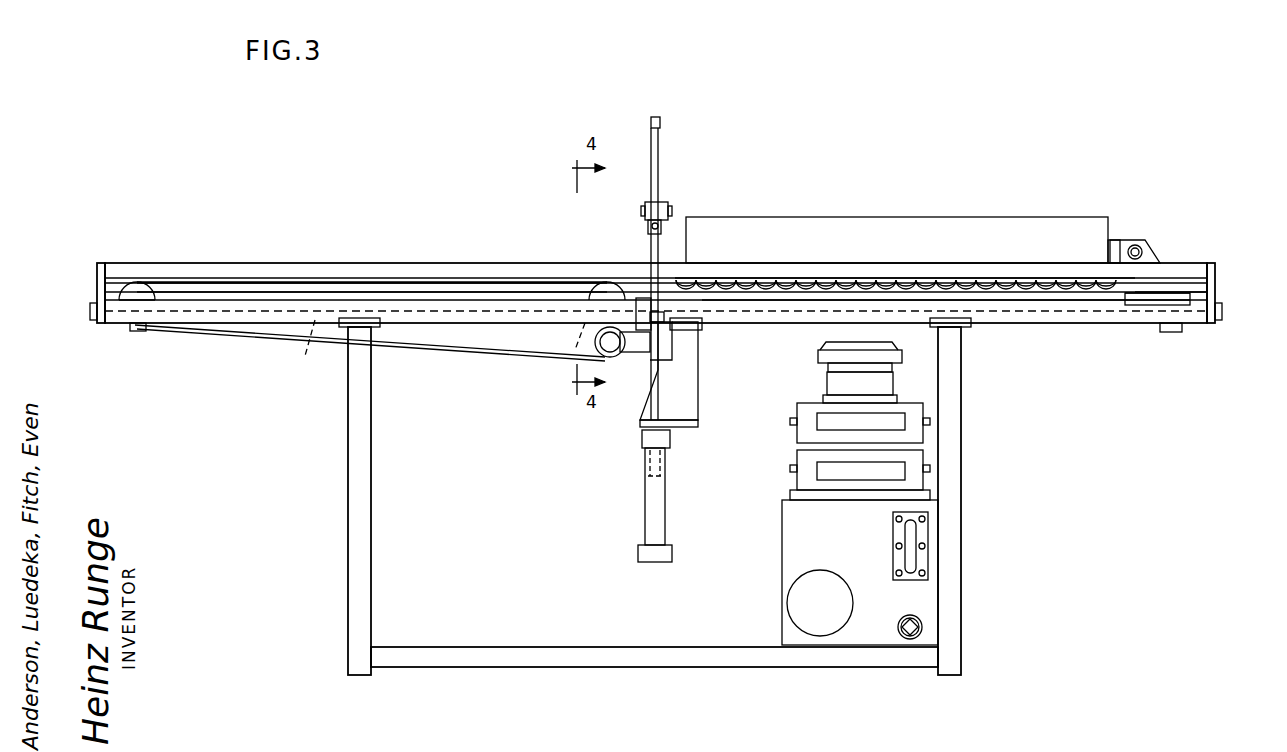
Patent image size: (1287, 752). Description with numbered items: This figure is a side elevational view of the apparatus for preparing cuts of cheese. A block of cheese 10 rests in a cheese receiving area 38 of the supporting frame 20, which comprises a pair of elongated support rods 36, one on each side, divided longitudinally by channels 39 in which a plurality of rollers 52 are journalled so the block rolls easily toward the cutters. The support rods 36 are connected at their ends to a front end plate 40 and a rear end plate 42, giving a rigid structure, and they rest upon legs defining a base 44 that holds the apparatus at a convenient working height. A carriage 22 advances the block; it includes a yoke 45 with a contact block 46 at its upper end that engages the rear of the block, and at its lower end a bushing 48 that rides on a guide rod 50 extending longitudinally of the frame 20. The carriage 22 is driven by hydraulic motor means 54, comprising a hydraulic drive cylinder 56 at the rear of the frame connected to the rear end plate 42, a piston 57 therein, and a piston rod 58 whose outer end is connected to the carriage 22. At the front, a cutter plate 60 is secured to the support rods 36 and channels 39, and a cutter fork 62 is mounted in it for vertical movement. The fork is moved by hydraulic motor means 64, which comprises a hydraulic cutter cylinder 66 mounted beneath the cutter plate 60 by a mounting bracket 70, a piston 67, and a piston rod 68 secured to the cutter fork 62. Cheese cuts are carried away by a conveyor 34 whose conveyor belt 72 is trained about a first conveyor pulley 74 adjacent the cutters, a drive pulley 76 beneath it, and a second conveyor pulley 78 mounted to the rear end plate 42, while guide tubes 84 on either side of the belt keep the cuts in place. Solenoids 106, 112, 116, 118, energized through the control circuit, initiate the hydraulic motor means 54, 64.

The block of cheese 10 is at (870, 228).
The supporting frame 20 is at (1200, 322).
The carriage 22 is at (1150, 252).
The conveyor 34 is at (345, 268).
The support rods 36 is at (185, 325).
The cheese receiving area 38 is at (814, 192).
The channels 39 is at (1180, 270).
The front end plate 40 is at (1222, 302).
The rear end plate 42 is at (100, 290).
The base 44 is at (958, 555).
The yoke 45 is at (1170, 290).
The contact block 46 is at (1120, 242).
The bushing 48 is at (1155, 305).
The guide rod 50 is at (1015, 305).
The rollers 52 is at (930, 282).
The hydraulic motor means 54 is at (255, 342).
The hydraulic drive cylinder 56 is at (303, 351).
The piston 57 is at (578, 325).
The piston rod 58 is at (786, 323).
The cutter plate 60 is at (660, 222).
The cutter fork 62 is at (658, 145).
The hydraulic motor means 64 is at (640, 481).
The hydraulic cutter cylinder 66 is at (665, 505).
The piston 67 is at (668, 472).
The piston rod 68 is at (662, 345).
The mounting bracket 70 is at (690, 400).
The conveyor belt 72 is at (420, 285).
The first conveyor pulley 74 is at (600, 290).
The drive pulley 76 is at (620, 356).
The second conveyor pulley 78 is at (140, 290).
The guide tubes 84 is at (230, 265).
The solenoid 106 is at (930, 466).
The solenoid 112 is at (795, 474).
The solenoid 116 is at (795, 424).
The solenoid 118 is at (930, 421).